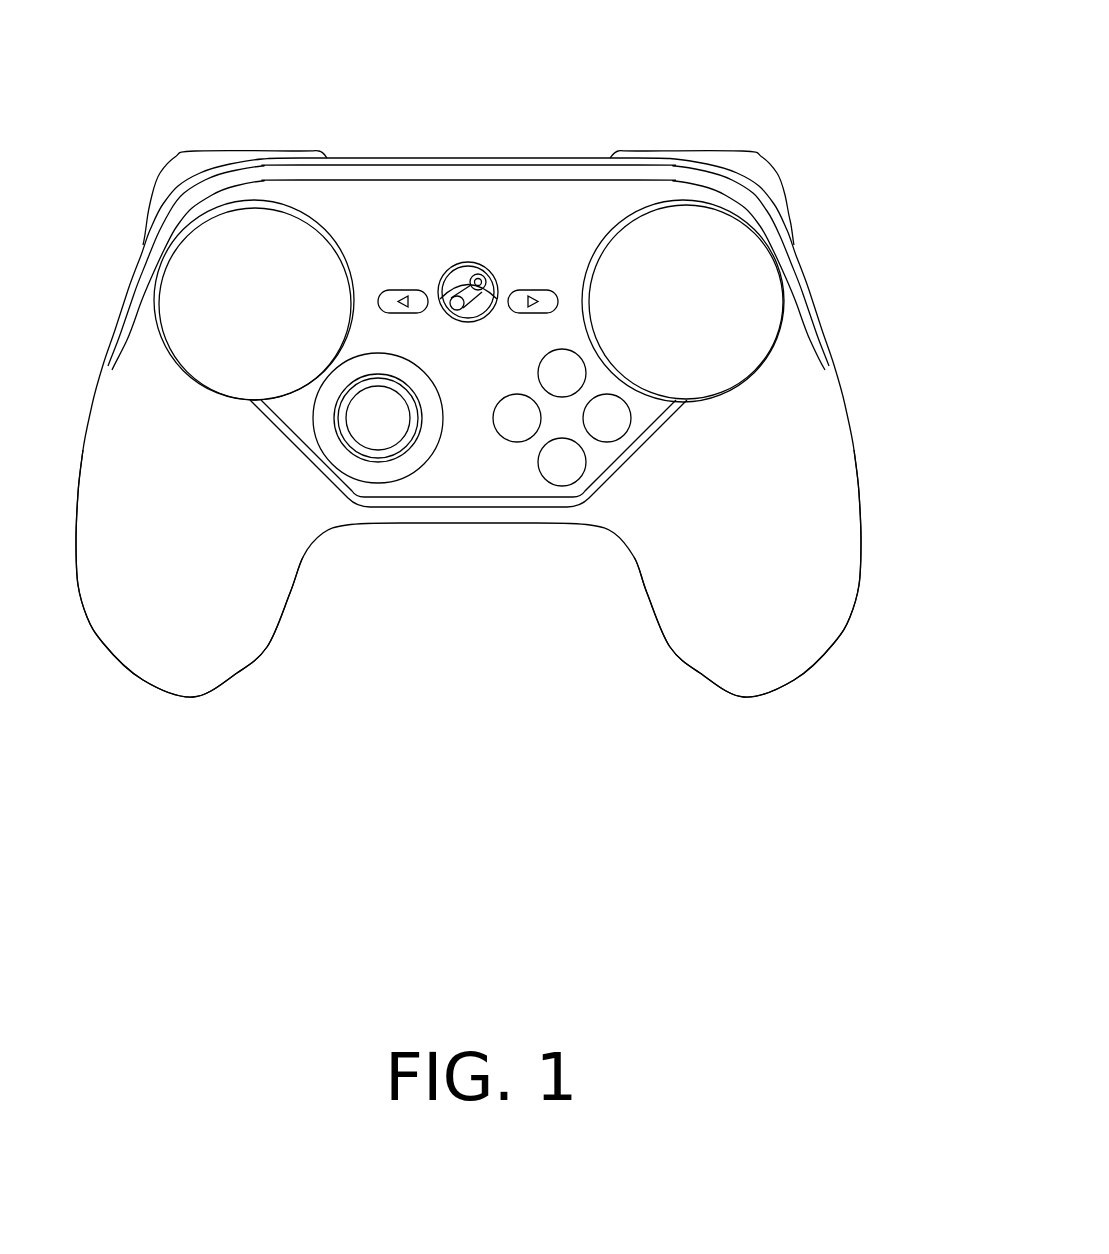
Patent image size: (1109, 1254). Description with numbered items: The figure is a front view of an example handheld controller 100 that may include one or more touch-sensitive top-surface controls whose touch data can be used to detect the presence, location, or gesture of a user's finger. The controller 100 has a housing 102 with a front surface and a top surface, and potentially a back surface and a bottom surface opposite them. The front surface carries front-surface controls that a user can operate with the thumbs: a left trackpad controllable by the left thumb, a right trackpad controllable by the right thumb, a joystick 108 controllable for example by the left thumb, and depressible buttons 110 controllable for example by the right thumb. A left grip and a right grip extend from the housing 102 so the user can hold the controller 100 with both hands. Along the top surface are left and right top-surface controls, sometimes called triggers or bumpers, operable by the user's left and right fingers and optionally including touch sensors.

The handheld controller 100 is at (846, 38).
The housing 102 is at (850, 410).
The joystick 108 is at (381, 453).
The depressible buttons 110 is at (561, 487).